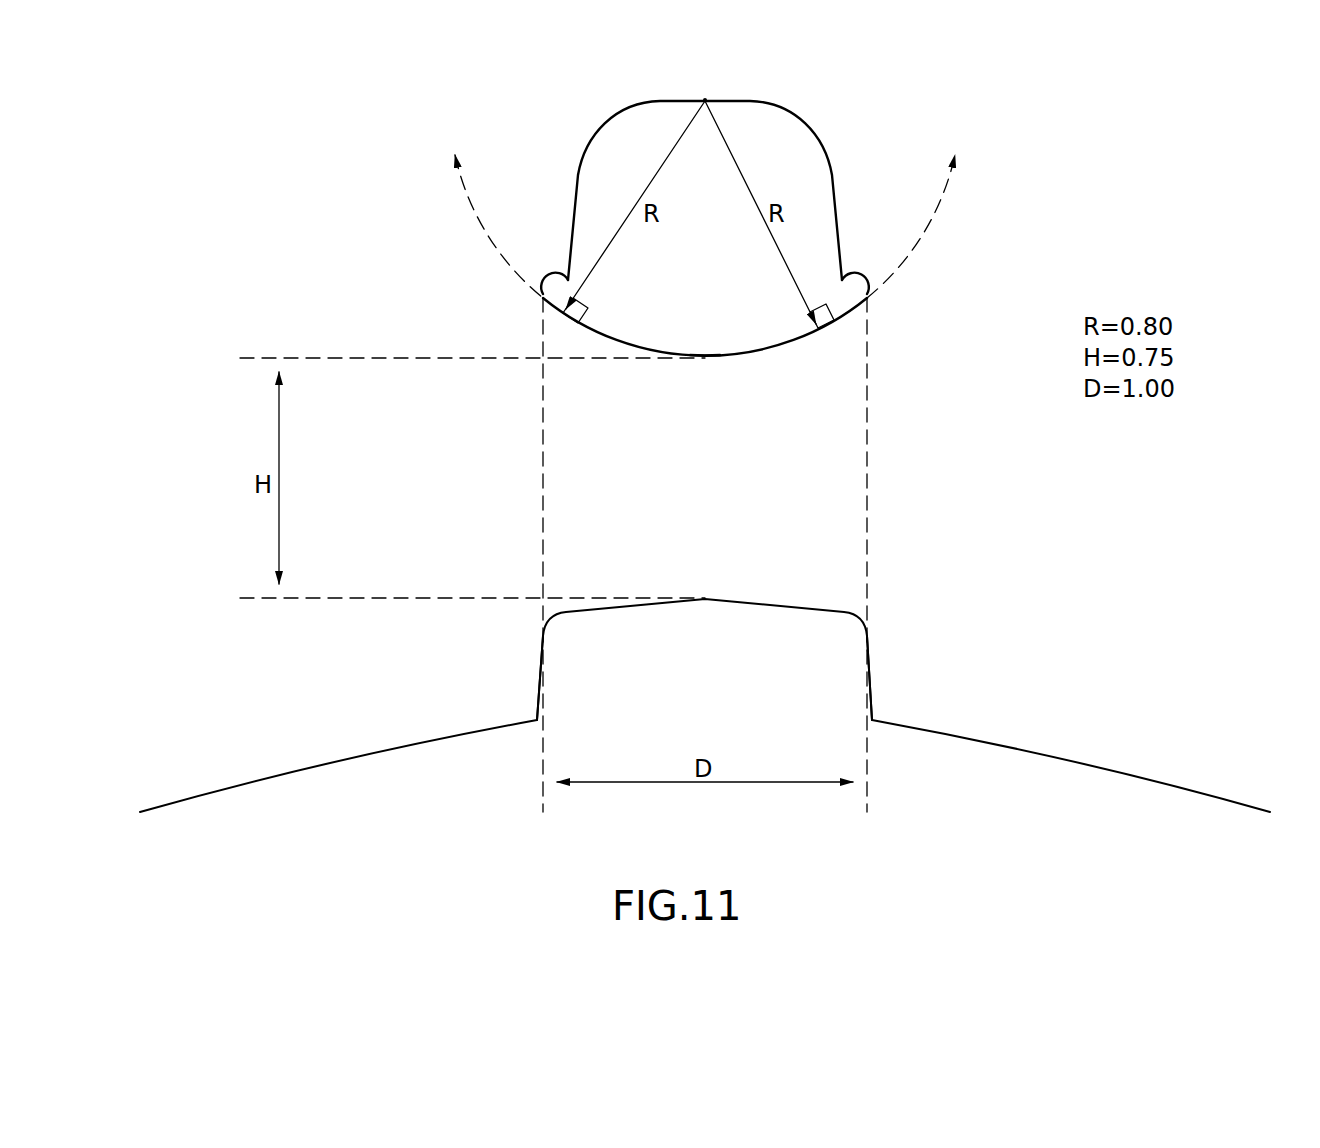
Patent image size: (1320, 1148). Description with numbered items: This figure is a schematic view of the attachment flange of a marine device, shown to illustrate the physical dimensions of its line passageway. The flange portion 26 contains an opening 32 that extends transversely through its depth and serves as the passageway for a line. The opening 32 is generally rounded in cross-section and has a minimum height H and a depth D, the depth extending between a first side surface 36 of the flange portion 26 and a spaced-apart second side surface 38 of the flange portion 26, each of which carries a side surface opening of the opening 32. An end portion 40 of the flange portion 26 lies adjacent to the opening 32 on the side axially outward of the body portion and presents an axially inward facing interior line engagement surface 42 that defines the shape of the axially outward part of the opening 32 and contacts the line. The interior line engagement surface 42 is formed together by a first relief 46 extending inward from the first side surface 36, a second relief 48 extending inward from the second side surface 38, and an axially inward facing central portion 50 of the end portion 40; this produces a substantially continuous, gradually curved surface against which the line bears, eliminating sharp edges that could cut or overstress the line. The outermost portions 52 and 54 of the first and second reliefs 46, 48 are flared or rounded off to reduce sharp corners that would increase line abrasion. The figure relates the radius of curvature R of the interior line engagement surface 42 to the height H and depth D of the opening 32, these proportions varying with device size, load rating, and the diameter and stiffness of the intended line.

The flange portion 26 is at (1032, 535).
The opening 32 is at (820, 490).
The first side surface 36 is at (537, 693).
The second side surface 38 is at (872, 686).
The end portion 40 is at (628, 127).
The interior line engagement surface 42 is at (737, 361).
The first relief 46 is at (572, 320).
The second relief 48 is at (864, 312).
The central portion 50 is at (704, 361).
The outermost portion of first relief 52 is at (540, 290).
The outermost portion of second relief 54 is at (870, 292).